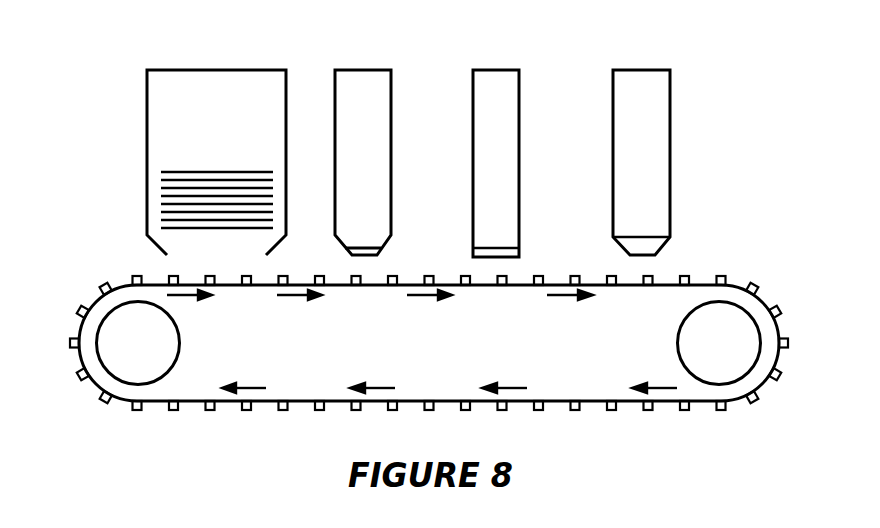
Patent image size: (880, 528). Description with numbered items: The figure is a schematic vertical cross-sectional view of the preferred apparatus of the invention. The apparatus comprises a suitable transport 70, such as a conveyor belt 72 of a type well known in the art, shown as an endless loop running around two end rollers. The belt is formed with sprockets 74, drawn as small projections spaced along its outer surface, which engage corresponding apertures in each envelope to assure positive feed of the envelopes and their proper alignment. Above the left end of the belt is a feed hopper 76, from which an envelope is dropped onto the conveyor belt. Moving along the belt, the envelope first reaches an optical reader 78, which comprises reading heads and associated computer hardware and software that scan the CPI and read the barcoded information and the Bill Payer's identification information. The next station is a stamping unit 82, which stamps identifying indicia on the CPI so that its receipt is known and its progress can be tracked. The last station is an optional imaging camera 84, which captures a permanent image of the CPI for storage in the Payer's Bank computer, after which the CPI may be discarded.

The transport 70 is at (118, 414).
The conveyor belt 72 is at (240, 410).
The sprockets 74 is at (135, 278).
The feed hopper 76 is at (135, 117).
The optical reader 78 is at (377, 66).
The stamping unit 82 is at (498, 80).
The imaging camera 84 is at (655, 118).